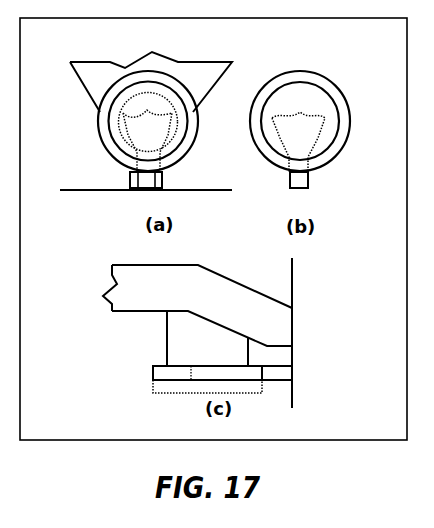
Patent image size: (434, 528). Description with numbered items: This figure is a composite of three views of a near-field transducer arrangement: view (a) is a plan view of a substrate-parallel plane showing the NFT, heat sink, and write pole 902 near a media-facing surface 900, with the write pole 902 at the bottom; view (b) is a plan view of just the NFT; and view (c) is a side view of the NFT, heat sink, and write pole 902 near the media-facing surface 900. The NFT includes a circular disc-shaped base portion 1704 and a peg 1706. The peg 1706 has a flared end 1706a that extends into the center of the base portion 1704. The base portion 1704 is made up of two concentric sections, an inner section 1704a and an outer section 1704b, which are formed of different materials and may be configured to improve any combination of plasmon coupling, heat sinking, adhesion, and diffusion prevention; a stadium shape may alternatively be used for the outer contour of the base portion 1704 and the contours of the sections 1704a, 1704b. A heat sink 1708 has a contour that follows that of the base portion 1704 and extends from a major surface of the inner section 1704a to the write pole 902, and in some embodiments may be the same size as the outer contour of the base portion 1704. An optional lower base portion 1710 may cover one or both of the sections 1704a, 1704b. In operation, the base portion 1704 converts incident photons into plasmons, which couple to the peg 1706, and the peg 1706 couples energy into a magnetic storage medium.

The media-facing surface 900 is at (98, 191).
The write pole 902 is at (104, 62).
The base portion 1704 is at (100, 137).
The inner section 1704a is at (339, 90).
The outer section 1704b is at (267, 110).
The peg 1706 is at (130, 181).
The flared end 1706a is at (279, 127).
The heat sink 1708 is at (125, 106).
The lower base portion 1710 is at (153, 393).